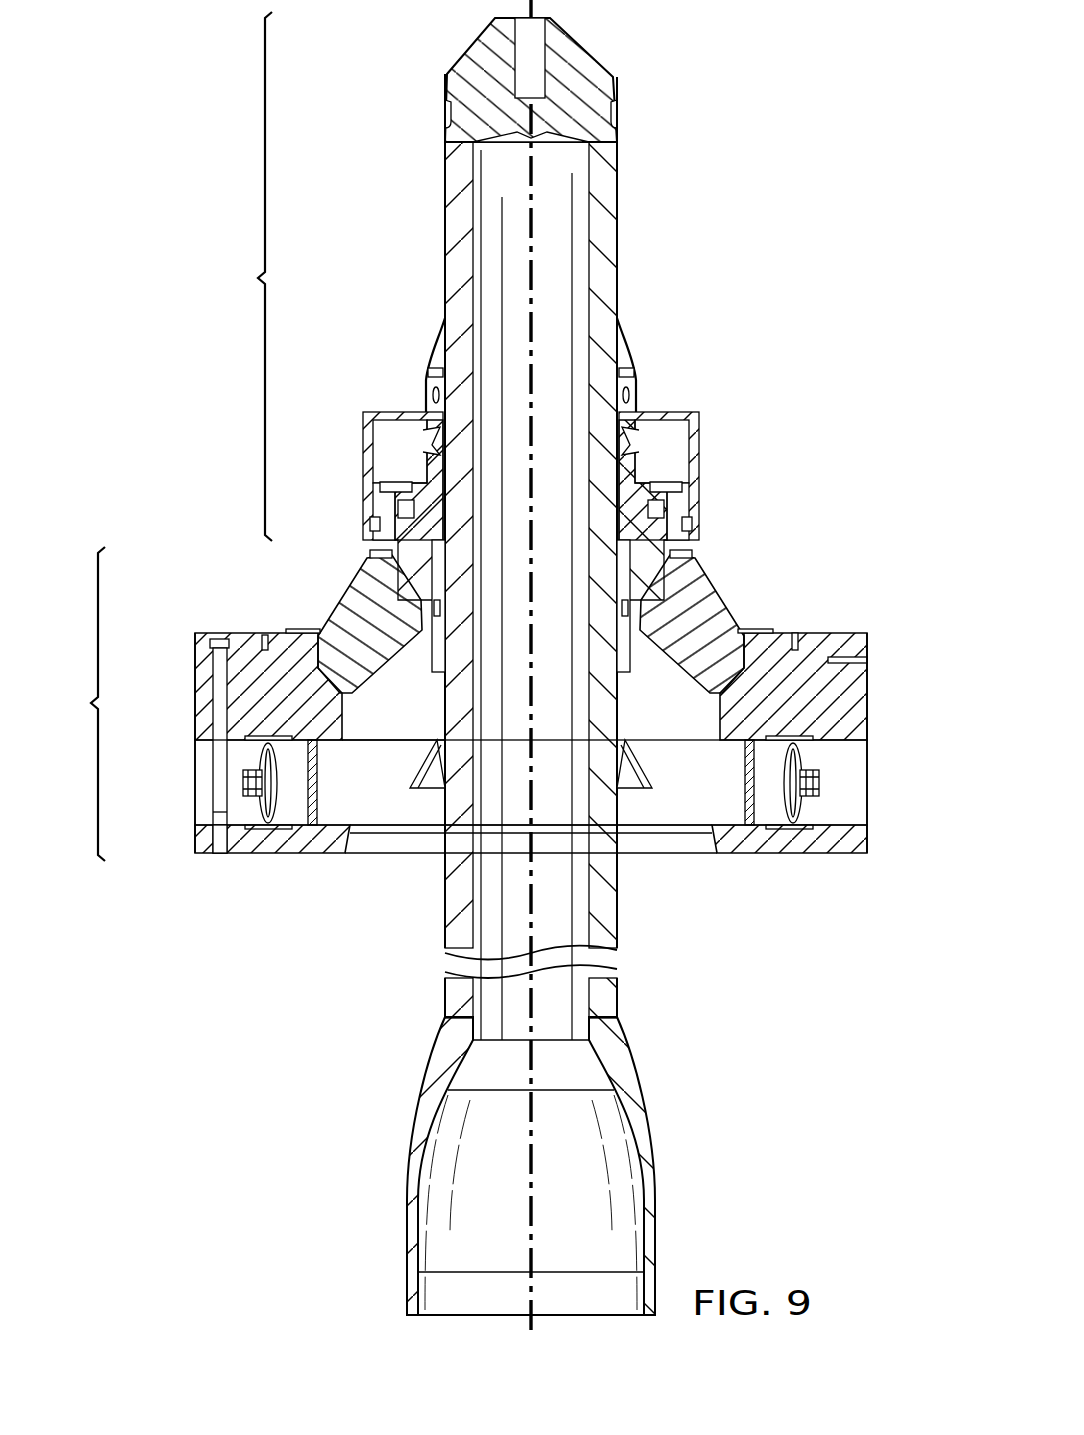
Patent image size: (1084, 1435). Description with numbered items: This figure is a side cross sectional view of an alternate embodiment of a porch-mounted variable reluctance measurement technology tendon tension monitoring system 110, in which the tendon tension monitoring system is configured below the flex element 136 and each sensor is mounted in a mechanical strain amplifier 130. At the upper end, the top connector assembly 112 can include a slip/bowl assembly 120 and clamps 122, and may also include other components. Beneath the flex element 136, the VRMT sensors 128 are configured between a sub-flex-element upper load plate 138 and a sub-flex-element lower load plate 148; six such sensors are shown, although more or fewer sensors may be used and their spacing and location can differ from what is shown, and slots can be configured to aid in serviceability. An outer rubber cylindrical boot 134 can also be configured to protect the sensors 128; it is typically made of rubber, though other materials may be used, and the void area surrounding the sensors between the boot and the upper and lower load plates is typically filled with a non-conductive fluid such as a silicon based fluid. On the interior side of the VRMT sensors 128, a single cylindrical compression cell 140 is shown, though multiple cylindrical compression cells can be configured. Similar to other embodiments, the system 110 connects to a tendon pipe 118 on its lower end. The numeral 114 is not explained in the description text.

The porch-mounted variable reluctance measurement technology tendon tension monitori 110 is at (692, 58).
The top connector assembly 112 is at (239, 276).
The lower section 114 is at (75, 704).
The tendon pipe 118 is at (407, 1292).
The slip/bowl assembly 120 is at (383, 412).
The clamps 122 is at (413, 451).
The VRMT sensors 128 is at (820, 784).
The mechanical strain amplifier 130 is at (846, 764).
The outer rubber cylindrical boot 134 is at (868, 784).
The flex element 136 is at (362, 596).
The sub-flex-element upper load plate 138 is at (202, 697).
The cylindrical compression cell 140 is at (318, 790).
The sub-flex-element lower load plate 148 is at (202, 832).